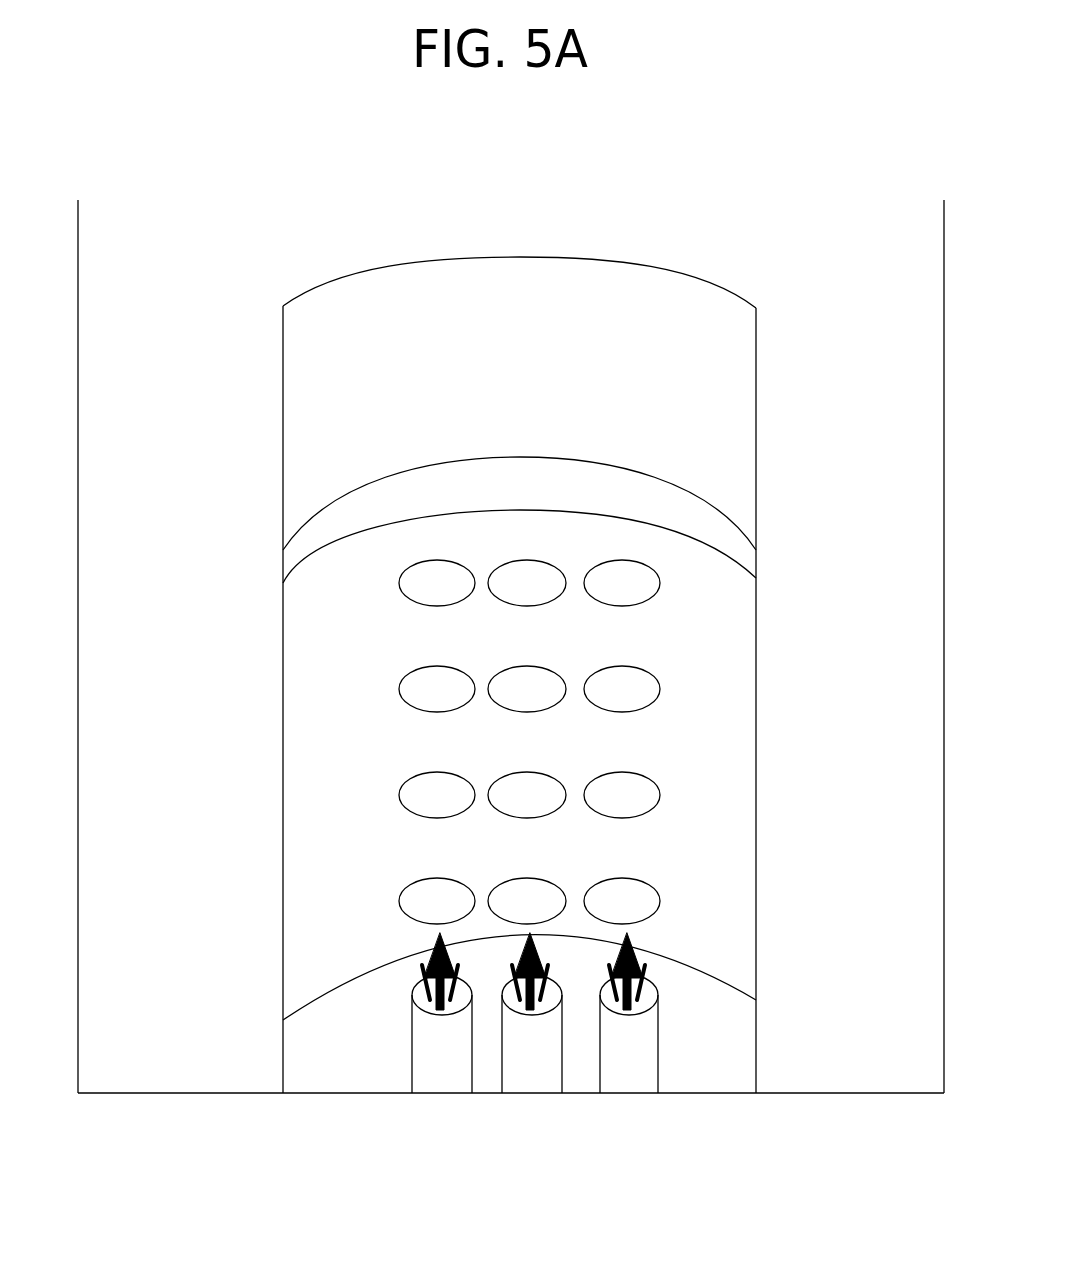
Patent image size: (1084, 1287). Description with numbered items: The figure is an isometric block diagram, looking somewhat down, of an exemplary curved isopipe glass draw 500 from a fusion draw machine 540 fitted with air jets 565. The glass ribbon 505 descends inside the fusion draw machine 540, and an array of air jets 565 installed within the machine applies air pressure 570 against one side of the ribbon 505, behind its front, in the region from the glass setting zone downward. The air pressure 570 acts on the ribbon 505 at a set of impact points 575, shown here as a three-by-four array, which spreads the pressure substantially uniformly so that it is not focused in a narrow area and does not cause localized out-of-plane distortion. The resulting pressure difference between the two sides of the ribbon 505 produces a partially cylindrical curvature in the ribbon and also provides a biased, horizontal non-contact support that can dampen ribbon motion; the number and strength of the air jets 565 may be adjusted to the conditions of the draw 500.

The curved isopipe glass draw 500 is at (668, 185).
The fusion draw machine 540 is at (78, 260).
The curved ribbon 505 is at (283, 579).
The impact points 575 is at (386, 586).
The air jets 565 is at (763, 1140).
The air pressure 570 is at (411, 970).